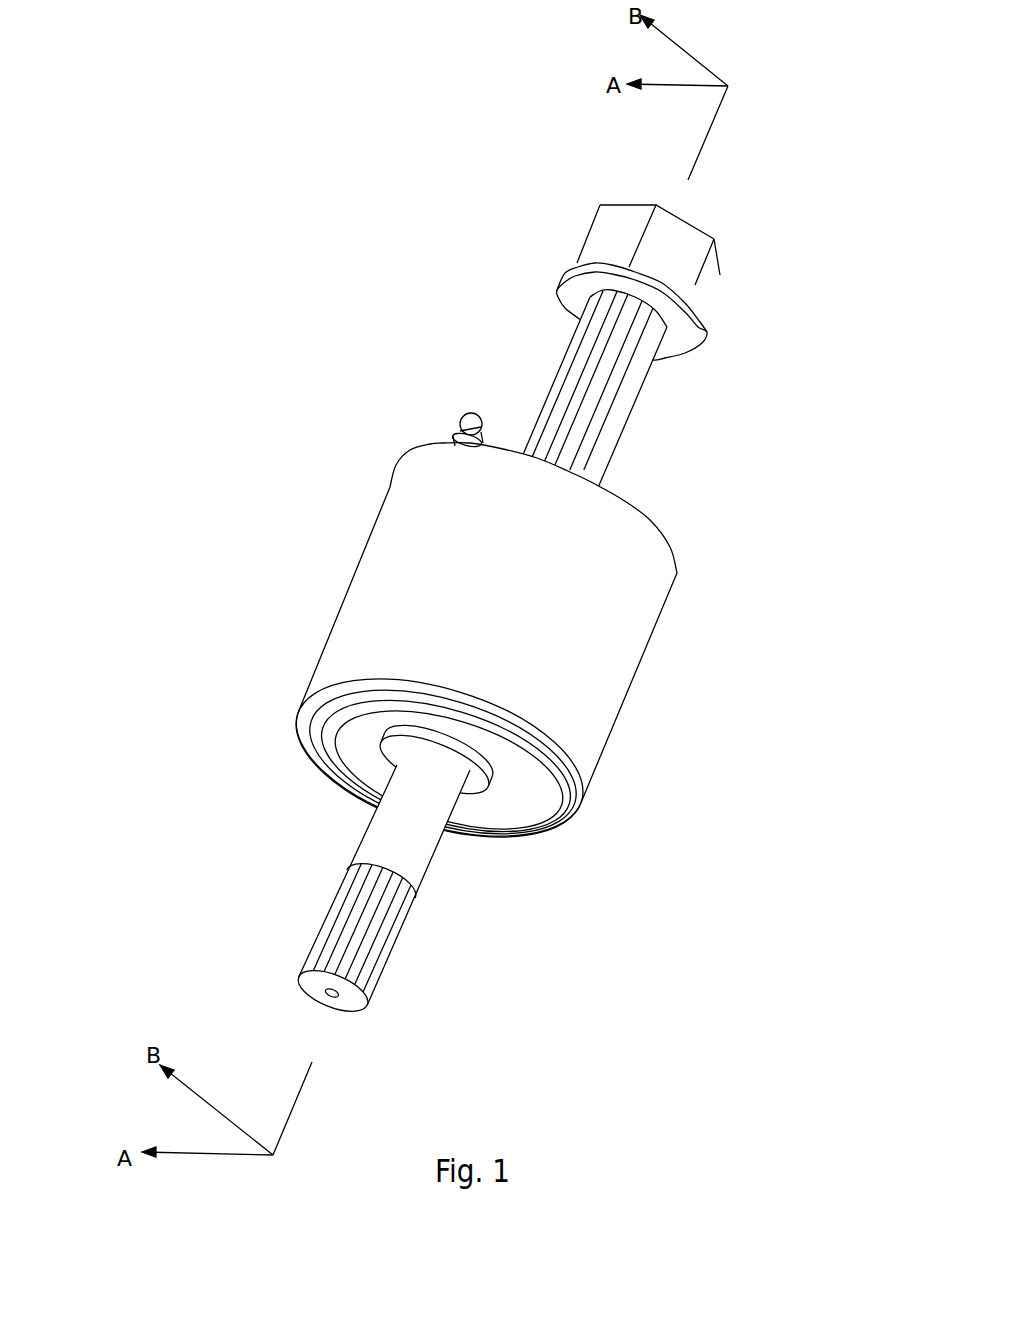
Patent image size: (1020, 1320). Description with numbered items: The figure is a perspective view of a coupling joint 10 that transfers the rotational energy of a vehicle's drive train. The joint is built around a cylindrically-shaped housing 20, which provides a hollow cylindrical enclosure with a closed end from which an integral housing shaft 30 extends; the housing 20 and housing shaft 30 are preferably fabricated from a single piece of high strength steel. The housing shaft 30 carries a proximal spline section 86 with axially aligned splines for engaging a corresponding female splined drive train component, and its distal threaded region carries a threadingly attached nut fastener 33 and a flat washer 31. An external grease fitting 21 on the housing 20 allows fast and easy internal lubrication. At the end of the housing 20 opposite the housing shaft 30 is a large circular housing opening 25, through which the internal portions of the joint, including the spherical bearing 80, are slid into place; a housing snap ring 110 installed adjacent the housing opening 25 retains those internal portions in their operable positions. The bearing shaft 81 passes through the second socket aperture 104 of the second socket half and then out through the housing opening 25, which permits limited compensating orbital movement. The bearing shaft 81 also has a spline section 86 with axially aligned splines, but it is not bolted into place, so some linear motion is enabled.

The coupling joint 10 is at (125, 268).
The housing 20 is at (613, 629).
The grease fitting 21 is at (473, 417).
The housing opening 25 is at (507, 833).
The housing shaft 30 is at (590, 428).
The flat washer 31 is at (677, 352).
The nut fastener 33 is at (690, 273).
The spherical bearing 80 is at (418, 755).
The bearing shaft 81 is at (412, 823).
The spline section 86 is at (347, 928).
The second socket aperture 104 is at (485, 784).
The housing snap ring 110 is at (527, 835).